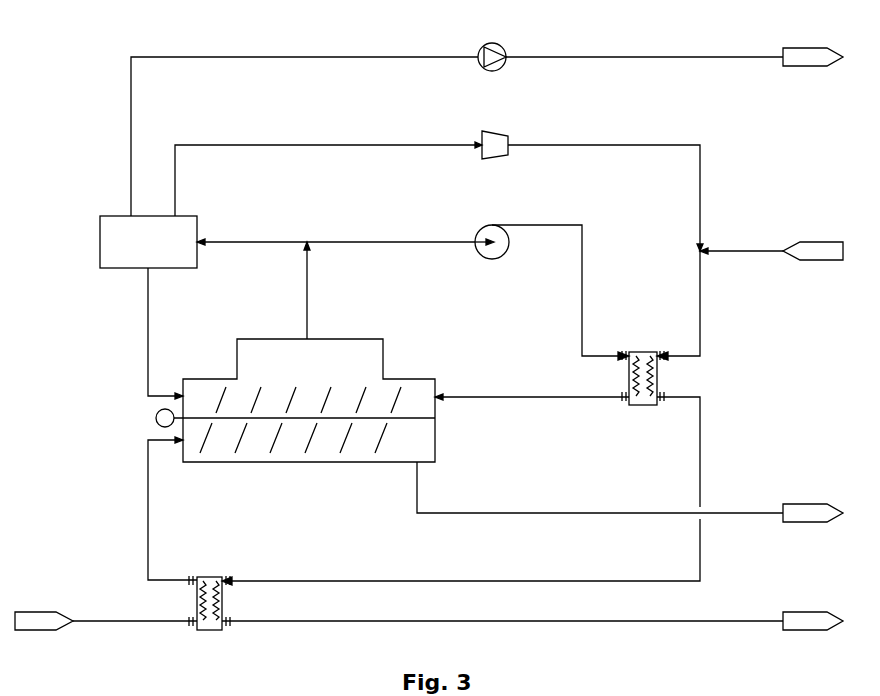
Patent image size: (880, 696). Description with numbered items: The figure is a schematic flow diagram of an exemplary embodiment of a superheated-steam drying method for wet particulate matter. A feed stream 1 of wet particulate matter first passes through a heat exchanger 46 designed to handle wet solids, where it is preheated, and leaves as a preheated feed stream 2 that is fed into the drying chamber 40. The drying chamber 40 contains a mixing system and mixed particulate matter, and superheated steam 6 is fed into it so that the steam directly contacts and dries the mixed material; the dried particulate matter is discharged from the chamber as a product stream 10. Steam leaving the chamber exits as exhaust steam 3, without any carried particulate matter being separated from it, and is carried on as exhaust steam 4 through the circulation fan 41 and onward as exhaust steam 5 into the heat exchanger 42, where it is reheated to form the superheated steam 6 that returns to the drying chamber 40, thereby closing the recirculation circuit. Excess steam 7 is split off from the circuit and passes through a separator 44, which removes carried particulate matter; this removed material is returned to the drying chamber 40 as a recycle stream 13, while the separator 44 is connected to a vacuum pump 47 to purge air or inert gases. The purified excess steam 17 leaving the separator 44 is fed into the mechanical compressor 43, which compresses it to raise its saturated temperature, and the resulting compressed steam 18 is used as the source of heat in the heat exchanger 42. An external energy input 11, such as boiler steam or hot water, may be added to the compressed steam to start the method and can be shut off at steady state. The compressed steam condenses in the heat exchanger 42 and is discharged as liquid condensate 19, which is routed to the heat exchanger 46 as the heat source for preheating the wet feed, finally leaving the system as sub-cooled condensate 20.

The feed stream 1 is at (106, 611).
The preheated feed stream 2 is at (163, 511).
The exhaust steam 3 is at (300, 290).
The exhaust steam 4 is at (391, 233).
The exhaust steam 5 is at (560, 279).
The superheated steam 6 is at (532, 386).
The excess steam 7 is at (252, 231).
The product stream 10 is at (630, 492).
The external energy input 11 is at (771, 243).
The recycle stream 13 is at (149, 333).
The purified excess steam 17 is at (328, 167).
The compressed steam 18 is at (605, 239).
The liquid condensate 19 is at (463, 488).
The sub-cooled condensate 20 is at (532, 612).
The drying chamber 40 is at (295, 400).
The circulation fan 41 is at (492, 226).
The heat exchanger 42 is at (642, 363).
The mechanical compressor 43 is at (496, 130).
The separator 44 is at (128, 242).
The heat exchanger 46 is at (207, 588).
The vacuum pump 47 is at (487, 117).